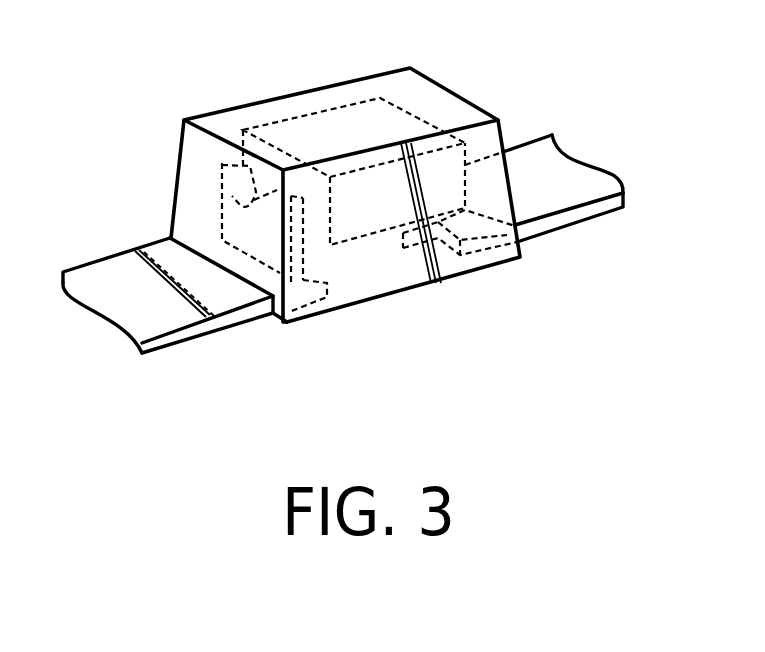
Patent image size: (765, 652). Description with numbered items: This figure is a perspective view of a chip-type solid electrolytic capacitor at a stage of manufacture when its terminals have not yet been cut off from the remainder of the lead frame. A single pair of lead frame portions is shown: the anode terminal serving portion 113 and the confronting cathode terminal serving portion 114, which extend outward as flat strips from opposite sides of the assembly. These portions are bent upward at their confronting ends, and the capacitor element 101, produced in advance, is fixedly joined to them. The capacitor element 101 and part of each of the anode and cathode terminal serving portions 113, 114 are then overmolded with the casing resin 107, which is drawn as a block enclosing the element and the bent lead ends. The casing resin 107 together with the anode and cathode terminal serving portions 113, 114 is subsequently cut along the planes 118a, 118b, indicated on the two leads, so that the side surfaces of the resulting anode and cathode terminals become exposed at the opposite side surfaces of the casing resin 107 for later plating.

The capacitor element 101 is at (343, 115).
The casing resin 107 is at (372, 267).
The anode terminal serving portion 113 is at (118, 275).
The cathode terminal serving portion 114 is at (530, 162).
The cutting plane 118a is at (215, 275).
The cutting plane 118b is at (495, 213).